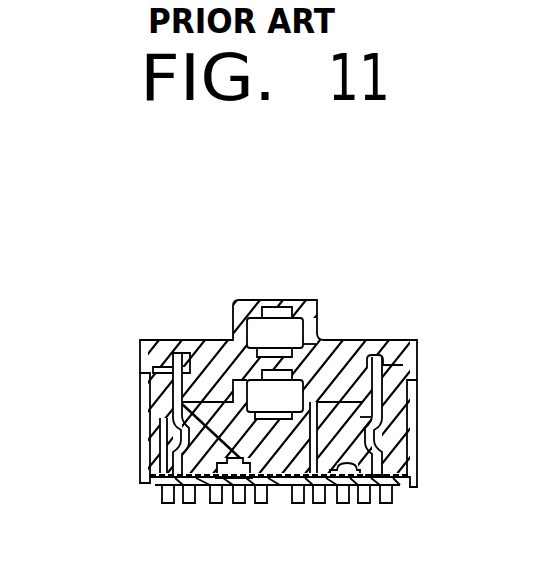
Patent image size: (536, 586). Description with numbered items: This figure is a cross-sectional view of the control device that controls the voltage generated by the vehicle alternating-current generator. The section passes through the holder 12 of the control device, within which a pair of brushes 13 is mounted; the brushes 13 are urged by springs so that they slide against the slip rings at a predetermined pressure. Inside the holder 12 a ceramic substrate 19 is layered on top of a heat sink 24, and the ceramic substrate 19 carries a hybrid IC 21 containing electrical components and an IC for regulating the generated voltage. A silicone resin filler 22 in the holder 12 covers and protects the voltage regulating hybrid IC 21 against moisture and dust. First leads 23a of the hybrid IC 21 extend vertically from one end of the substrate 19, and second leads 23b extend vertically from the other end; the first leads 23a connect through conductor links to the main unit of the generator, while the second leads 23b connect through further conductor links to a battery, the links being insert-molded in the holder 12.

The holder 12 is at (352, 350).
The brushes 13 is at (233, 348).
The ceramic substrate 19 is at (358, 481).
The hybrid IC 21 is at (215, 478).
The silicone resin filler 22 is at (373, 479).
The first leads 23a is at (412, 411).
The second leads 23b is at (150, 431).
The heat sink 24 is at (222, 479).